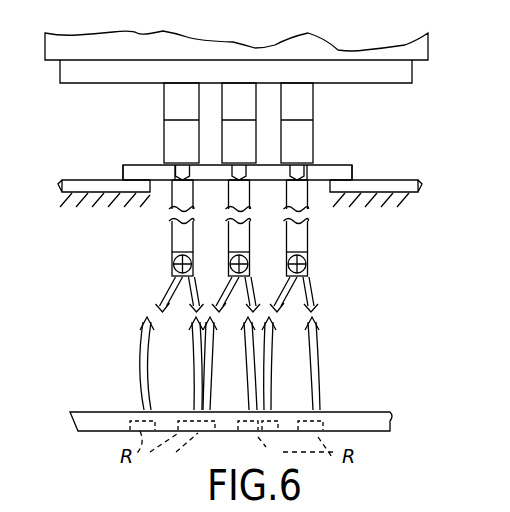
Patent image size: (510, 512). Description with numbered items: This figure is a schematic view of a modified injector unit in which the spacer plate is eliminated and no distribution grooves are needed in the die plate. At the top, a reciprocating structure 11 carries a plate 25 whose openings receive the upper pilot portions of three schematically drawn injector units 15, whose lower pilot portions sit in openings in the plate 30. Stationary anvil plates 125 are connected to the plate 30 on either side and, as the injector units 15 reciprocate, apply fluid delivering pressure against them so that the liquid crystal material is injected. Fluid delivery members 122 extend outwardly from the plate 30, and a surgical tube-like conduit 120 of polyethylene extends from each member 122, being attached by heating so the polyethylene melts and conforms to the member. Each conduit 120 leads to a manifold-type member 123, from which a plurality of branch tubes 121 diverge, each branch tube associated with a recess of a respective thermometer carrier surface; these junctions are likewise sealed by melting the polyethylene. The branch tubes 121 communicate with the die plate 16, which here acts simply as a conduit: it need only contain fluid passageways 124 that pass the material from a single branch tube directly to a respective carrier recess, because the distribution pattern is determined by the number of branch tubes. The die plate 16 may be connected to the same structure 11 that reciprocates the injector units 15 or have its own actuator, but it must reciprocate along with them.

The structure 11 is at (76, 37).
The plate 25 is at (112, 83).
The injector unit 15 is at (200, 122).
The fluid delivery member 122 is at (318, 166).
The plate 30 is at (129, 168).
The stationary anvil plate 125 is at (99, 168).
The surgical tube-like conduit 120 is at (172, 246).
The manifold-type member 123 is at (232, 263).
The branch tube 121 is at (345, 344).
The fluid passageway 124 is at (188, 420).
The die plate 16 is at (376, 412).